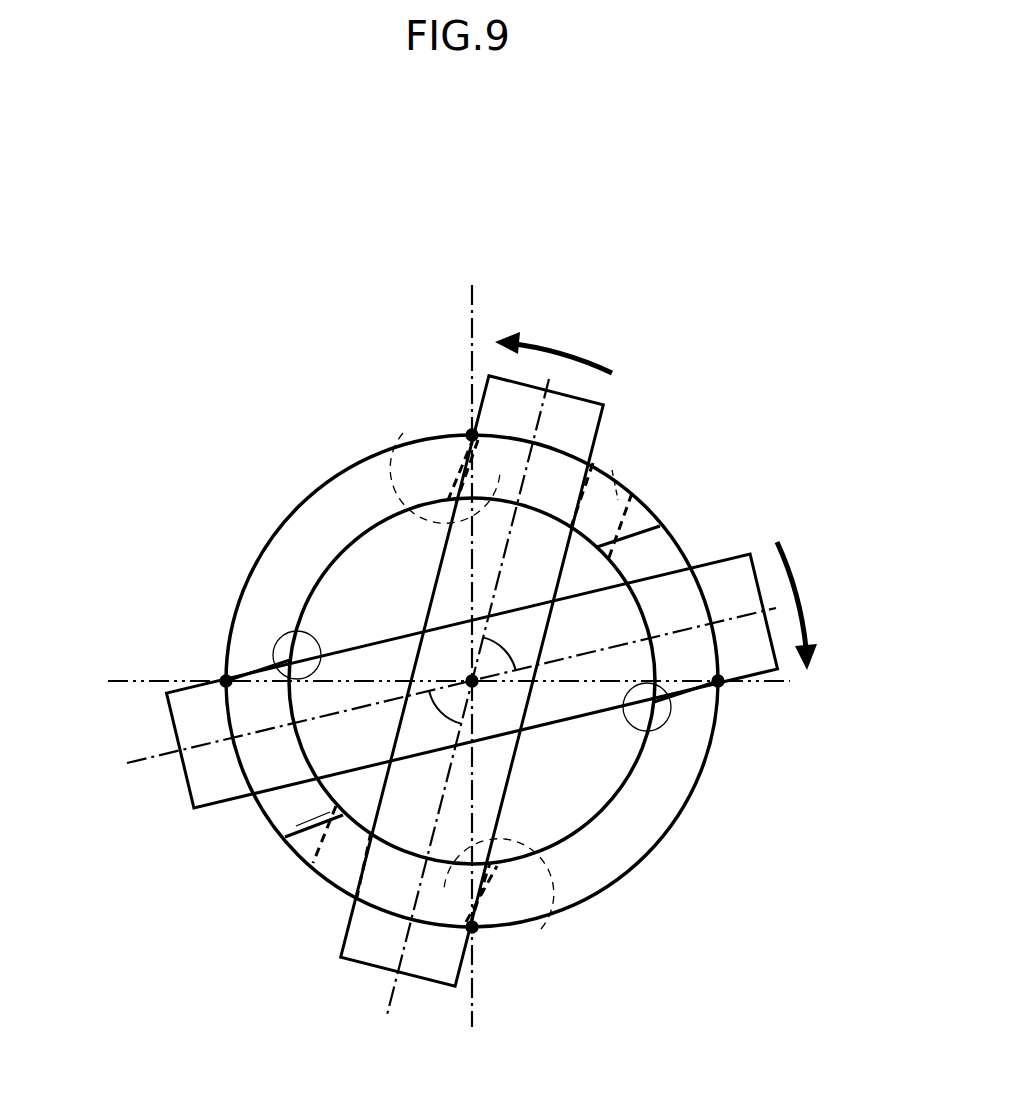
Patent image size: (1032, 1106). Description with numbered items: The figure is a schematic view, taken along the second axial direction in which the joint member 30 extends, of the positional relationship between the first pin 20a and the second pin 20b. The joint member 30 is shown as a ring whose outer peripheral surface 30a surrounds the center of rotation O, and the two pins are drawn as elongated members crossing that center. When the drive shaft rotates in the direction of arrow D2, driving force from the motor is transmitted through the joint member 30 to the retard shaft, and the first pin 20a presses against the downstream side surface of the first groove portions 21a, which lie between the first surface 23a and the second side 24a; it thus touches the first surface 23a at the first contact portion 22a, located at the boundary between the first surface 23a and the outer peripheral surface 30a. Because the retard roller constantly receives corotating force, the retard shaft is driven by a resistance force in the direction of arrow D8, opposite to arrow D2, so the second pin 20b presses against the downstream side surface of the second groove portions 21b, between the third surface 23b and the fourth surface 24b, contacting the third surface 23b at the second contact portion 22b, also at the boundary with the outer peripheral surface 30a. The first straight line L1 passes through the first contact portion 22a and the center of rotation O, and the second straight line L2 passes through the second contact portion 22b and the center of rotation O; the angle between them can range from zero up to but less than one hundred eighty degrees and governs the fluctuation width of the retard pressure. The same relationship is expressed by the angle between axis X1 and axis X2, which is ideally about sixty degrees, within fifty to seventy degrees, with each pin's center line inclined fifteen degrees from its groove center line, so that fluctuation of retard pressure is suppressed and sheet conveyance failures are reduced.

The first pin 20a is at (604, 402).
The second pin 20b is at (760, 590).
The first groove portions 21a is at (614, 490).
The second groove portions 21b is at (647, 543).
The first contact portion 22a is at (470, 433).
The second contact portion 22b is at (226, 678).
The first surface 23a is at (406, 440).
The third surface 23b is at (317, 652).
The second side 24a is at (618, 492).
The fourth surface 24b is at (296, 826).
The joint member 30 is at (472, 645).
The outer peripheral surface 30a is at (360, 460).
The first straight line L1 is at (471, 314).
The second straight line L2 is at (122, 683).
The axis X1 is at (385, 998).
The axis X2 is at (128, 766).
The arrow D2 is at (540, 343).
The arrow D8 is at (803, 597).
The center of rotation O is at (459, 667).